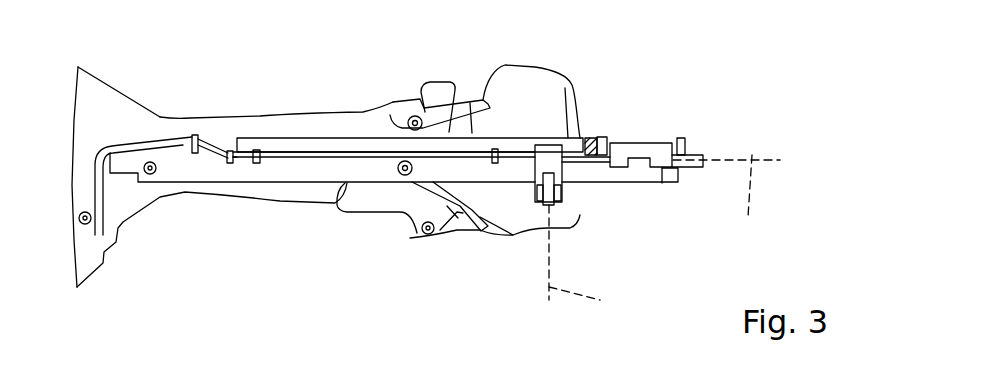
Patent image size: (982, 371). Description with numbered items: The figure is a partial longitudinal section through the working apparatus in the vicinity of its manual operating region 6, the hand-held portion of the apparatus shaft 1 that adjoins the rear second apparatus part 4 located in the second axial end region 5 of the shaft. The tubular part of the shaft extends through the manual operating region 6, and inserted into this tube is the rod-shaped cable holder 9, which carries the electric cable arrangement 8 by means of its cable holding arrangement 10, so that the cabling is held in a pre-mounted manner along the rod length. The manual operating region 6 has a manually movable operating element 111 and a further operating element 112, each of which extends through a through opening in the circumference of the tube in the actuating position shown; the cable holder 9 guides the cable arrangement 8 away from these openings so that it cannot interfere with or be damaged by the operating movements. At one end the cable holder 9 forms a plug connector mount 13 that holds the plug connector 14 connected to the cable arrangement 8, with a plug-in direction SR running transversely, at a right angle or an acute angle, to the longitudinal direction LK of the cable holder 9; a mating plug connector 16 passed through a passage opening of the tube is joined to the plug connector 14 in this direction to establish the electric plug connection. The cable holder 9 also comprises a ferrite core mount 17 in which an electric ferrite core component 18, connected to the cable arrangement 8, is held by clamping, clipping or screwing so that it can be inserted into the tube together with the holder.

The apparatus shaft 1 is at (247, 113).
The second apparatus part 4 is at (88, 78).
The second axial end region 5 is at (158, 116).
The manual operating region 6 is at (300, 195).
The electric cable arrangement 8 is at (340, 152).
The cable holder 9 is at (360, 170).
The cable holding arrangement 10 is at (195, 153).
The operating element 111 is at (378, 198).
The further operating element 112 is at (312, 120).
The plug connector mount 13 is at (562, 145).
The plug connector 14 is at (553, 167).
The mating plug connector 16 is at (560, 197).
The ferrite core mount 17 is at (663, 173).
The ferrite core component 18 is at (637, 145).
The longitudinal direction LK is at (726, 206).
The plug-in direction SR is at (592, 261).